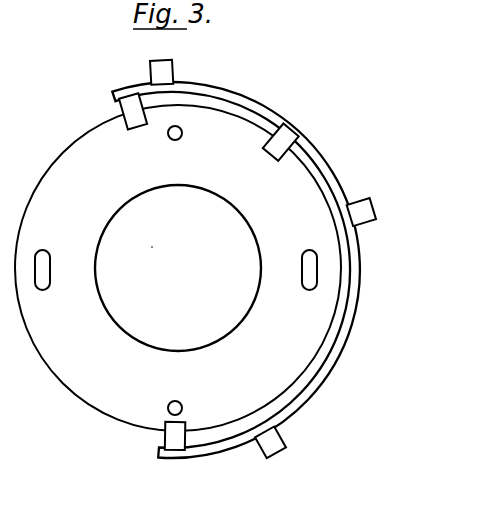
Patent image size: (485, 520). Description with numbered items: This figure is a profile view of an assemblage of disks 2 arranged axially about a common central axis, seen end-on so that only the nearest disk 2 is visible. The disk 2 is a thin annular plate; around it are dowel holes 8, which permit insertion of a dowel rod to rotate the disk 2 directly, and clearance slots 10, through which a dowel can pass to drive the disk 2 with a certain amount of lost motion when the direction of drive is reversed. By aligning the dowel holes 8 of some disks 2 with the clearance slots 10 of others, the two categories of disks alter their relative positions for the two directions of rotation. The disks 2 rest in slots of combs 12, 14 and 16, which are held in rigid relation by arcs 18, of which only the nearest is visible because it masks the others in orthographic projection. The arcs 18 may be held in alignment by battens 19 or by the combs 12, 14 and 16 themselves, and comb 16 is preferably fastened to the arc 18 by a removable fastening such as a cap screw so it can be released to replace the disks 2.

The disk 2 is at (53, 181).
The dowel hole 8 is at (171, 139).
The clearance slot 10 is at (49, 256).
The support comb 12 is at (175, 438).
The comb 14 is at (276, 151).
The comb 16 is at (124, 108).
The arc 18 is at (262, 107).
The batten 19 is at (170, 69).